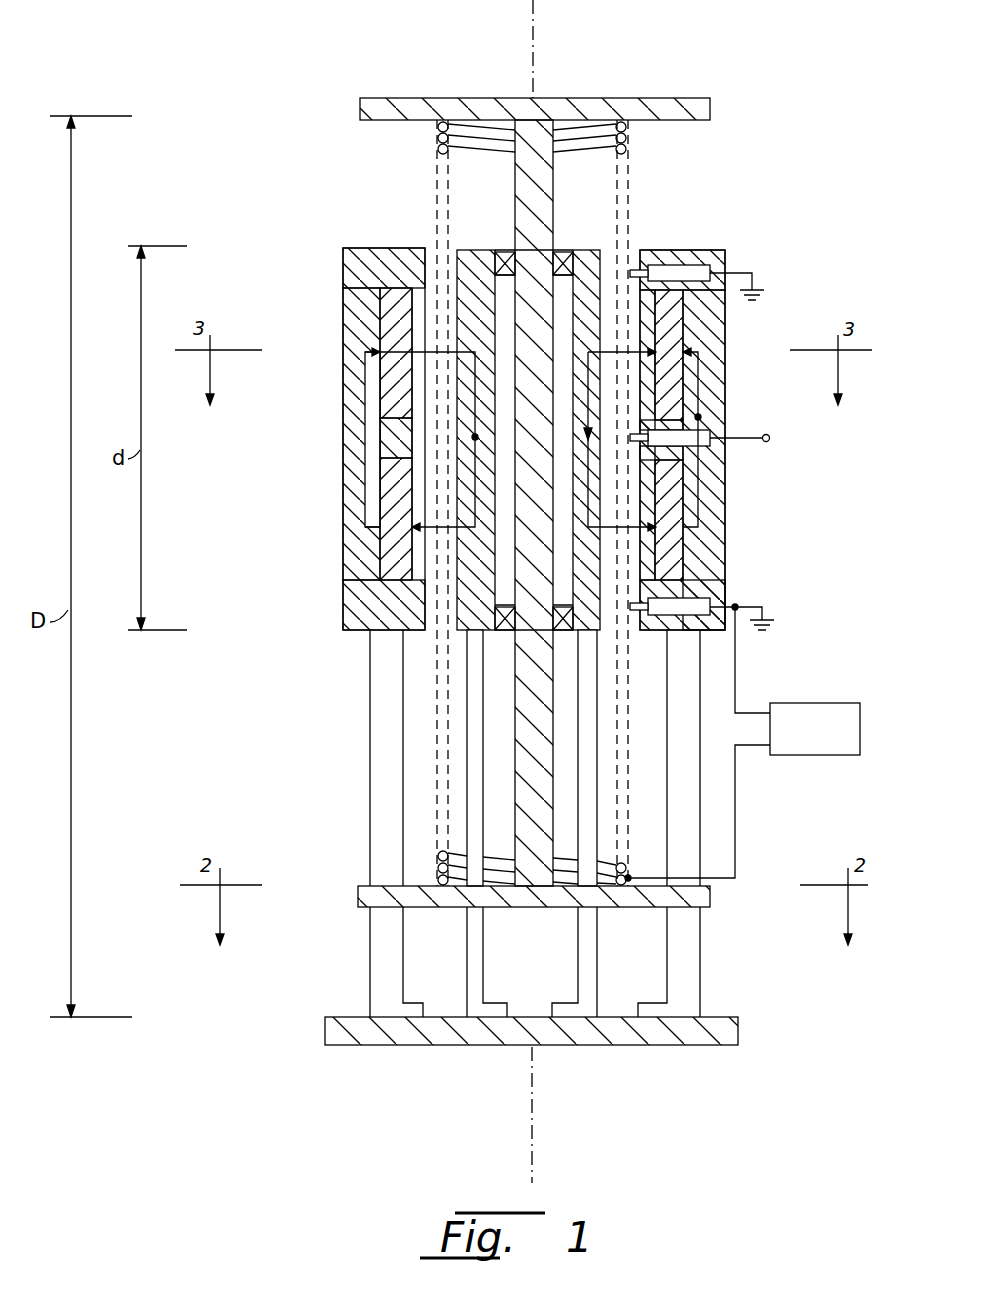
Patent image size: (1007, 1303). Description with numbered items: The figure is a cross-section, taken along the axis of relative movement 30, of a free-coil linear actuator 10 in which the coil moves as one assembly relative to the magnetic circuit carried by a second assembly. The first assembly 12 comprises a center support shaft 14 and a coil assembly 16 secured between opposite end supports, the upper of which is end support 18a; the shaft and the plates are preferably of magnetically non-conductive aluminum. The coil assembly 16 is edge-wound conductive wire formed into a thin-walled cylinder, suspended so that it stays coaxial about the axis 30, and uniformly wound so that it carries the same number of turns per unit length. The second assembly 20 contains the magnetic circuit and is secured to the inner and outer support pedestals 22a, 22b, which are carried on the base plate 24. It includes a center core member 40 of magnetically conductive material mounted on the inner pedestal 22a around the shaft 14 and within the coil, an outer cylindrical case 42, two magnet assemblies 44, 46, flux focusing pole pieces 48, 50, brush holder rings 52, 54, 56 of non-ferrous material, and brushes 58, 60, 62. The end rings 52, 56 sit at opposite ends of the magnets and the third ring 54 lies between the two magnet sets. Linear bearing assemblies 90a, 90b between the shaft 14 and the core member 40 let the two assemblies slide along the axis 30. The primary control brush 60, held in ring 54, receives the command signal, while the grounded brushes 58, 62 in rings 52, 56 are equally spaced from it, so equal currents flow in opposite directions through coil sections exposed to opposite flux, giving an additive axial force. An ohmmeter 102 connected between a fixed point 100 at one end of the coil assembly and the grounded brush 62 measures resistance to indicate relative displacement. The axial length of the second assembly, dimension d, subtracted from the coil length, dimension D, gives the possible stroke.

The actuator 10 is at (285, 718).
The first assembly 12 is at (360, 902).
The center support shaft 14 is at (512, 180).
The coil assembly 16 is at (627, 152).
The end support 18a is at (415, 98).
The second assembly 20 is at (526, 455).
The inner support pedestal 22a is at (467, 758).
The outer support pedestal 22b is at (378, 765).
The base plate 24 is at (738, 1022).
The axis of relative movement 30 is at (536, 42).
The center core member 40 is at (592, 235).
The outer cylindrical case 42 is at (378, 318).
The magnet assembly 44 is at (378, 388).
The magnet assembly 46 is at (380, 495).
The flux focusing pole piece 48 is at (378, 290).
The flux focusing pole piece 50 is at (378, 555).
The brush holder ring 52 is at (711, 426).
The brush holder ring 54 is at (380, 445).
The brush holder ring 56 is at (705, 584).
The grounded contact brush 58 is at (680, 266).
The primary control contact brush 60 is at (705, 438).
The grounded contact brush 62 is at (705, 607).
The linear bearing assembly 90a is at (503, 252).
The linear bearing assembly 90b is at (500, 630).
The fixed point of coil assembly 100 is at (630, 876).
The ohmmeter 102 is at (860, 722).